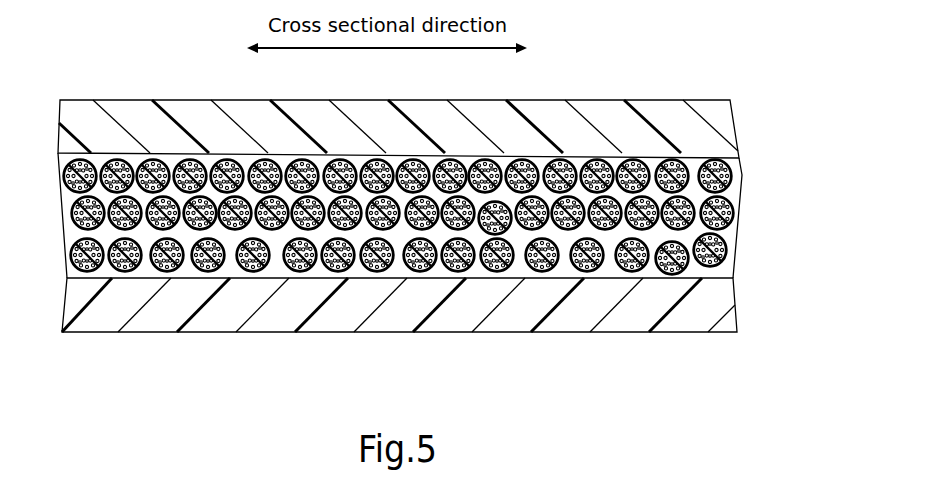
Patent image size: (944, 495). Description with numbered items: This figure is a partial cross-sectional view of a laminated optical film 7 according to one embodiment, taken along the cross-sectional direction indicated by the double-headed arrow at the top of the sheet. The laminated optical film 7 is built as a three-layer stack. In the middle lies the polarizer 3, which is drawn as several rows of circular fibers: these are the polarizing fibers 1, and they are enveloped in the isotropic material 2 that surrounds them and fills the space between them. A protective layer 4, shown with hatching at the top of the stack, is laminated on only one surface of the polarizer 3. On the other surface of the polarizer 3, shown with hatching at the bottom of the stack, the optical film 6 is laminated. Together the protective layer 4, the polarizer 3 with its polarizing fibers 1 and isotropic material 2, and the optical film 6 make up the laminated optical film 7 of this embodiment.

The polarizing fibers 1 is at (736, 210).
The isotropic material 2 is at (739, 249).
The polarizer 3 is at (439, 215).
The protective layer 4 is at (739, 130).
The optical film 6 is at (734, 312).
The laminated optical film 7 is at (666, 80).